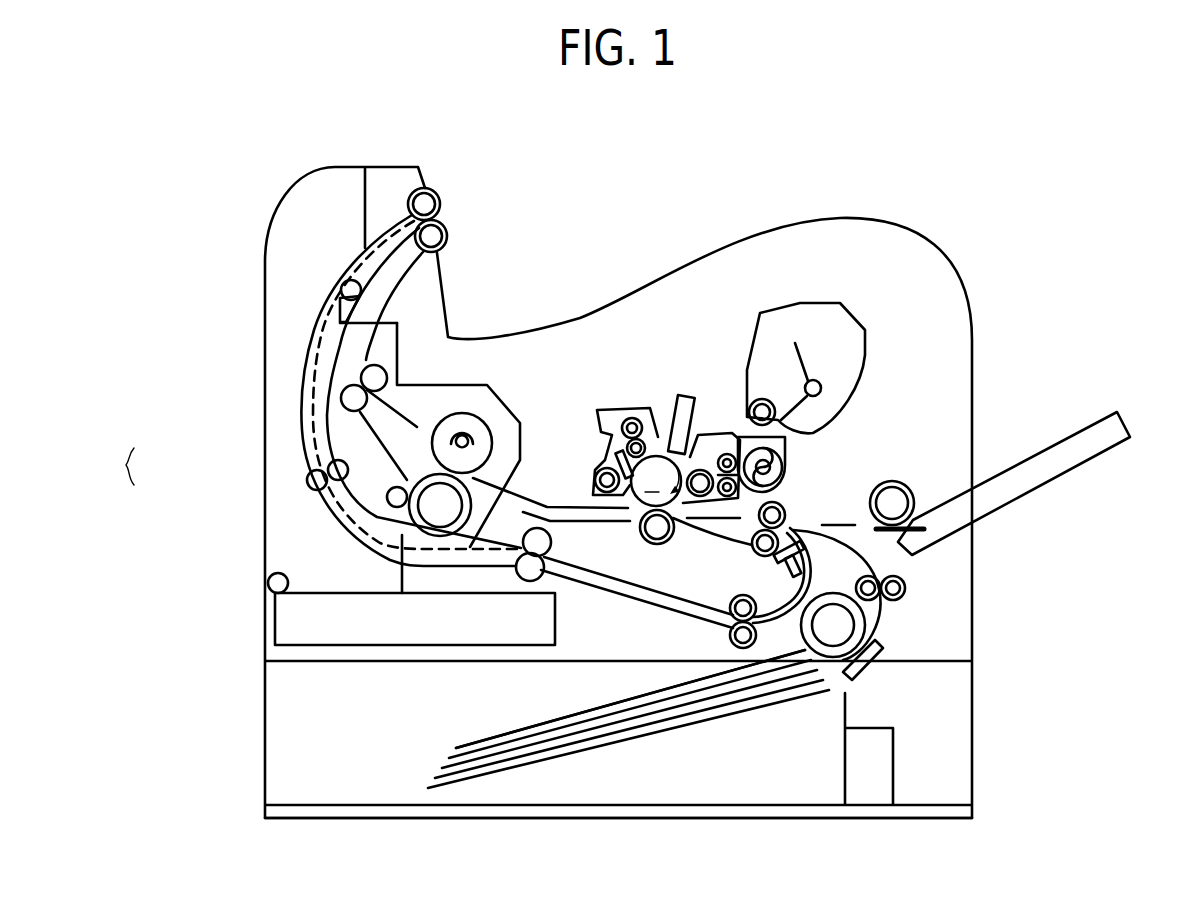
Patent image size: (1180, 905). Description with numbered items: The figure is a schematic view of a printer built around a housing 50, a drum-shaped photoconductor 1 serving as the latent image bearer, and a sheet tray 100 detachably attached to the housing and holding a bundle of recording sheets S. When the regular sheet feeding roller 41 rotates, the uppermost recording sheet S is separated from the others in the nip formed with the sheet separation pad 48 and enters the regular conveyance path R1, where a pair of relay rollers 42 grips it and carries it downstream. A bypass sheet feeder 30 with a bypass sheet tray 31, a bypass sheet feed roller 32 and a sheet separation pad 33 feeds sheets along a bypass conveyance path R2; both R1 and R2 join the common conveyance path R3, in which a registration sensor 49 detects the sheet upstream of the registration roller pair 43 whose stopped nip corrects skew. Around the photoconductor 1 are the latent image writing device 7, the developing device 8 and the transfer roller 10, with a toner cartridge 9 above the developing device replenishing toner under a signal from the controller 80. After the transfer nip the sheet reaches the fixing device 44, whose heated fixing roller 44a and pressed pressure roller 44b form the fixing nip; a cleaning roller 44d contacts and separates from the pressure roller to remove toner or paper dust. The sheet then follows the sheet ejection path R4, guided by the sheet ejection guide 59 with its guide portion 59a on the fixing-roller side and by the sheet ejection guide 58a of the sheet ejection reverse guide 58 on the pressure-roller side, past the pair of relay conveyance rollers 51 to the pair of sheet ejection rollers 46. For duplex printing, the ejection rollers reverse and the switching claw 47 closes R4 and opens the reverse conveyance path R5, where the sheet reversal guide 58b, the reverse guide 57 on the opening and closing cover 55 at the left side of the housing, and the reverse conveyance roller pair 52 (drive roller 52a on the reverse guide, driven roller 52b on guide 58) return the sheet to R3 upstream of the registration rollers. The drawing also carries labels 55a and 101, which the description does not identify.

The sheet tray 100 is at (365, 820).
The housing 50 is at (976, 322).
The photoconductor 1 is at (656, 481).
The latent image writing device 7 is at (685, 393).
The developing device 8 is at (740, 436).
The toner cartridge 9 is at (874, 344).
The transfer roller 10 is at (668, 533).
The bypass sheet feeder 30 is at (998, 527).
The bypass sheet tray 31 is at (1100, 420).
The bypass sheet feed roller 32 is at (906, 488).
The sheet separation pad 33 is at (880, 538).
The regular sheet feeding roller 41 is at (805, 641).
The pair of relay rollers 42 is at (916, 584).
The registration roller pair 43 is at (790, 492).
The fixing device 44 is at (508, 392).
The fixing roller 44a is at (462, 412).
The pressure roller 44b is at (462, 538).
The cleaning roller 44d is at (381, 508).
The pair of sheet ejection rollers 46 is at (450, 240).
The switching claw 47 is at (340, 300).
The sheet separation pad 48 is at (862, 672).
The registration sensor 49 is at (780, 567).
The pair of relay conveyance rollers 51 is at (376, 362).
The reverse conveyance roller pair 52 is at (119, 466).
The drive roller 52a is at (307, 479).
The driven roller 52b is at (318, 466).
The opening and closing cover 55 is at (265, 259).
The cover pivot 55a is at (268, 583).
The reverse guide 57 is at (333, 517).
The sheet ejection reverse guide 58 is at (345, 432).
The sheet ejection guide 58a is at (397, 460).
The sheet reversal guide 58b is at (333, 340).
The sheet ejection guide 59 is at (400, 394).
The guide portion 59a is at (410, 426).
The controller 80 is at (275, 622).
The sheet cassette 101 is at (655, 727).
The recording sheet S is at (495, 740).
The regular conveyance path R1 is at (880, 628).
The bypass conveyance path R2 is at (855, 512).
The common conveyance path R3 is at (822, 525).
The sheet ejection path R4 is at (341, 332).
The reverse conveyance path R5 is at (317, 373).